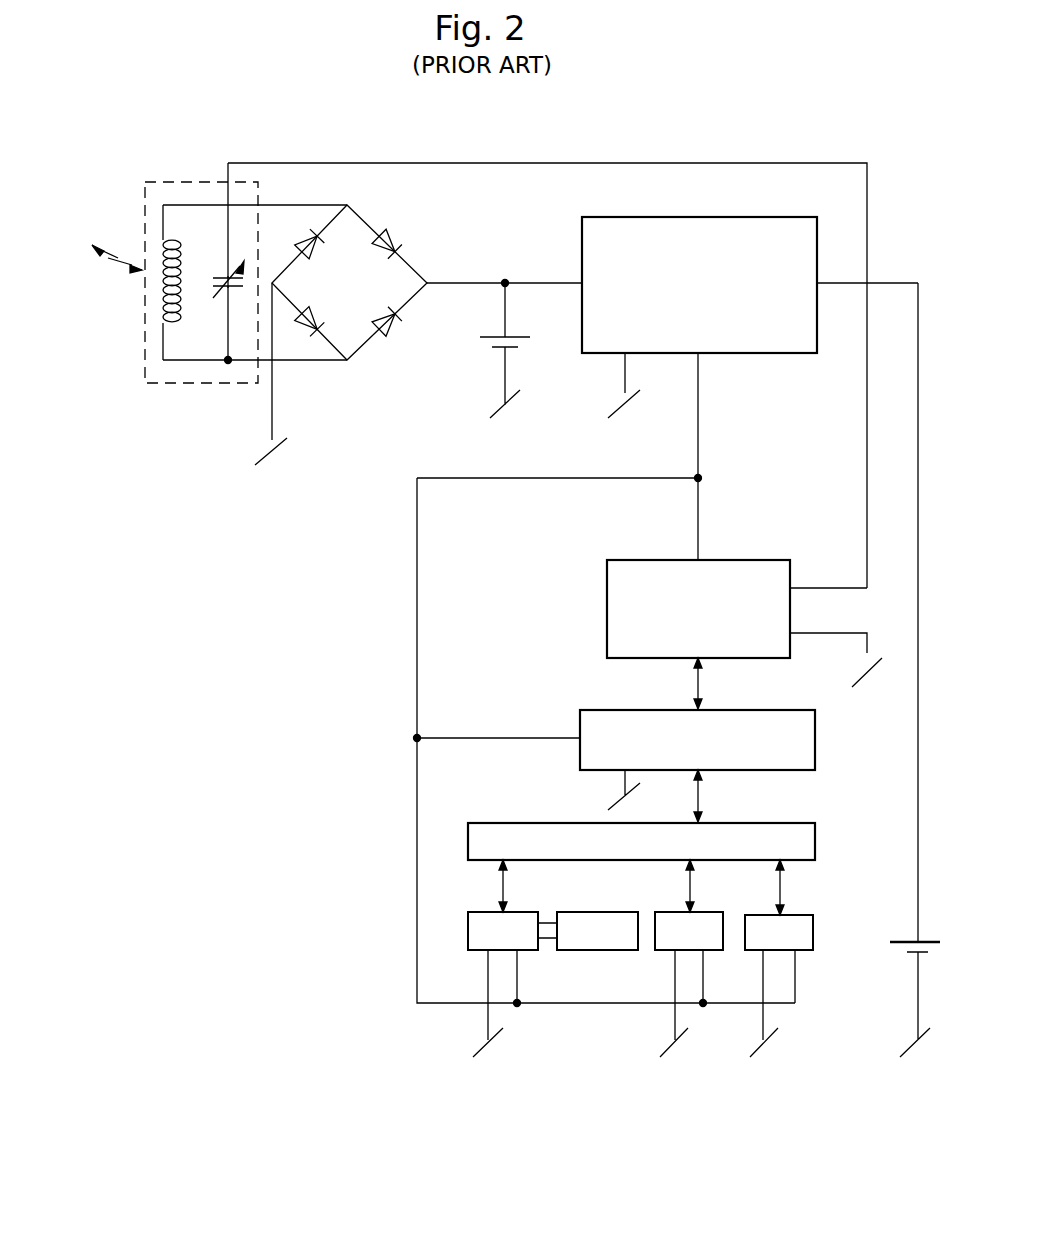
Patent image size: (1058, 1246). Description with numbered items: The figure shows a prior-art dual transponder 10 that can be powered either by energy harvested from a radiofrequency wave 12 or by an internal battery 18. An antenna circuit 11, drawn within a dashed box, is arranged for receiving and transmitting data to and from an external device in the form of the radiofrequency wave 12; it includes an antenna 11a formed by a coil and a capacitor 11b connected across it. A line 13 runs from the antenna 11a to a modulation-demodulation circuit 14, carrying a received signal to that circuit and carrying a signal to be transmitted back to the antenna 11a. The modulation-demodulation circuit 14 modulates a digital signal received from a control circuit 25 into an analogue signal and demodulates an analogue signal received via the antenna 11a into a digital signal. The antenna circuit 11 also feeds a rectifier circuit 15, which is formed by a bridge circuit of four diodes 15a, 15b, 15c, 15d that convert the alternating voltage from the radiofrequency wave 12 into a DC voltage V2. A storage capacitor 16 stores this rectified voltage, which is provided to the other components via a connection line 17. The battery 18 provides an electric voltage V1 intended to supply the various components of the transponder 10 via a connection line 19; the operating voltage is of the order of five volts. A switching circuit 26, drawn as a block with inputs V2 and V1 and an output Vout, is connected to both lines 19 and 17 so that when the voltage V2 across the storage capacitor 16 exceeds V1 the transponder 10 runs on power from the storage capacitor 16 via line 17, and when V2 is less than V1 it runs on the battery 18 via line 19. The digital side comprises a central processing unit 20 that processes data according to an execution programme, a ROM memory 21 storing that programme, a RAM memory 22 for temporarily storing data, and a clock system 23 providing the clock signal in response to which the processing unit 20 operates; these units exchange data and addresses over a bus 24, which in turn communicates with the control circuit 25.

The dual transponder 10 is at (348, 597).
The antenna circuit 11 is at (190, 182).
The antenna 11a is at (160, 313).
The capacitor 11b is at (212, 266).
The radiofrequency wave 12 is at (118, 258).
The line 13 is at (705, 163).
The modulation-demodulation circuit 14 is at (750, 560).
The rectifier circuit 15 is at (360, 290).
The diode 15a is at (305, 240).
The diode 15b is at (310, 325).
The diode 15c is at (397, 330).
The diode 15d is at (393, 236).
The storage capacitor 16 is at (495, 335).
The connection line 17 is at (522, 283).
The battery 18 is at (903, 940).
The connection line 19 is at (918, 815).
The central processing unit 20 is at (525, 912).
The ROM memory 21 is at (710, 912).
The RAM memory 22 is at (803, 915).
The clock system 23 is at (598, 912).
The bus 24 is at (748, 823).
The control circuit 25 is at (748, 710).
The switching circuit 26 is at (750, 217).